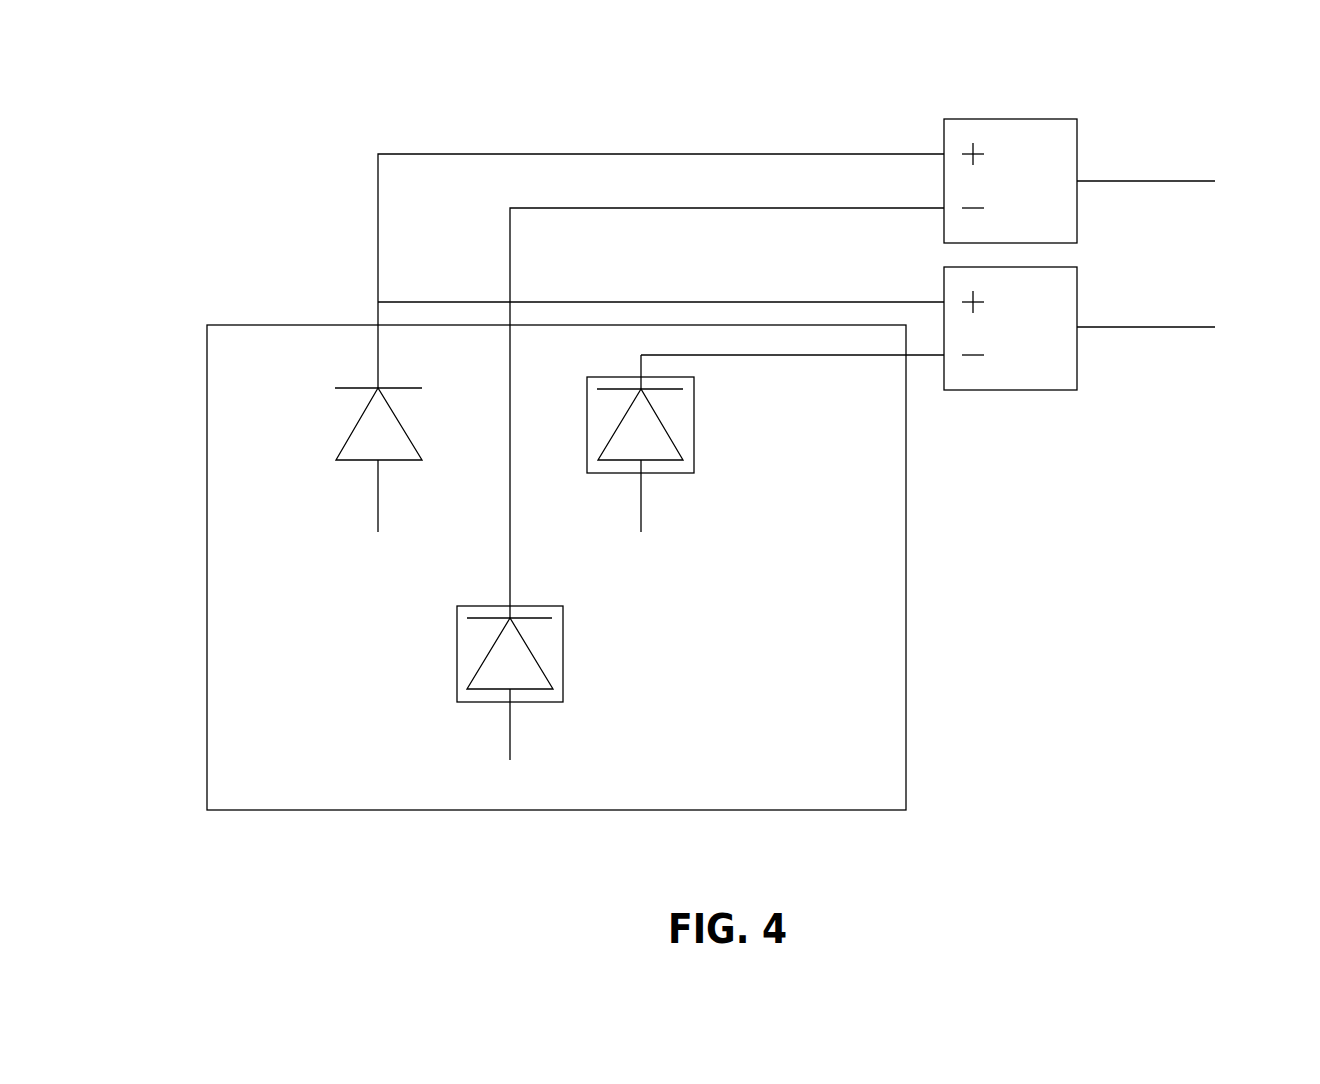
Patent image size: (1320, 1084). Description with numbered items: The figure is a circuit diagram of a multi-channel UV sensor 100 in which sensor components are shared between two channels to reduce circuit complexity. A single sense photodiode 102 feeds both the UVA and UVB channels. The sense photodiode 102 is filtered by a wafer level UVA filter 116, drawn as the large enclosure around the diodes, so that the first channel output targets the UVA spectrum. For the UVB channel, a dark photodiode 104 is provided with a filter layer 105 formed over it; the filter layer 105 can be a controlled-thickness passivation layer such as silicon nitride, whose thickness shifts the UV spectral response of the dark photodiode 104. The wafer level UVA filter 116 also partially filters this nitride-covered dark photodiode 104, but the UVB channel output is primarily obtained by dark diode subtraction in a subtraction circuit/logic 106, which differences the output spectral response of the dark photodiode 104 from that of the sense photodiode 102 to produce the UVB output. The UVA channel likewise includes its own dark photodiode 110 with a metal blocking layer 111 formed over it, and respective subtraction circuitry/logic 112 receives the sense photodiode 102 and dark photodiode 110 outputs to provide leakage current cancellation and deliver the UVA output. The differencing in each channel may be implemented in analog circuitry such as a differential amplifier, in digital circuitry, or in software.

The UV sensor 100 is at (240, 113).
The sense photodiode 102 is at (358, 463).
The dark photodiode 104 is at (662, 464).
The filter layer 105 is at (694, 446).
The subtraction circuit/logic 106 is at (1043, 390).
The dark photodiode 110 is at (487, 652).
The metal blocking layer 111 is at (563, 652).
The subtraction circuitry/logic 112 is at (1010, 117).
The wafer level UVA filter 116 is at (221, 323).